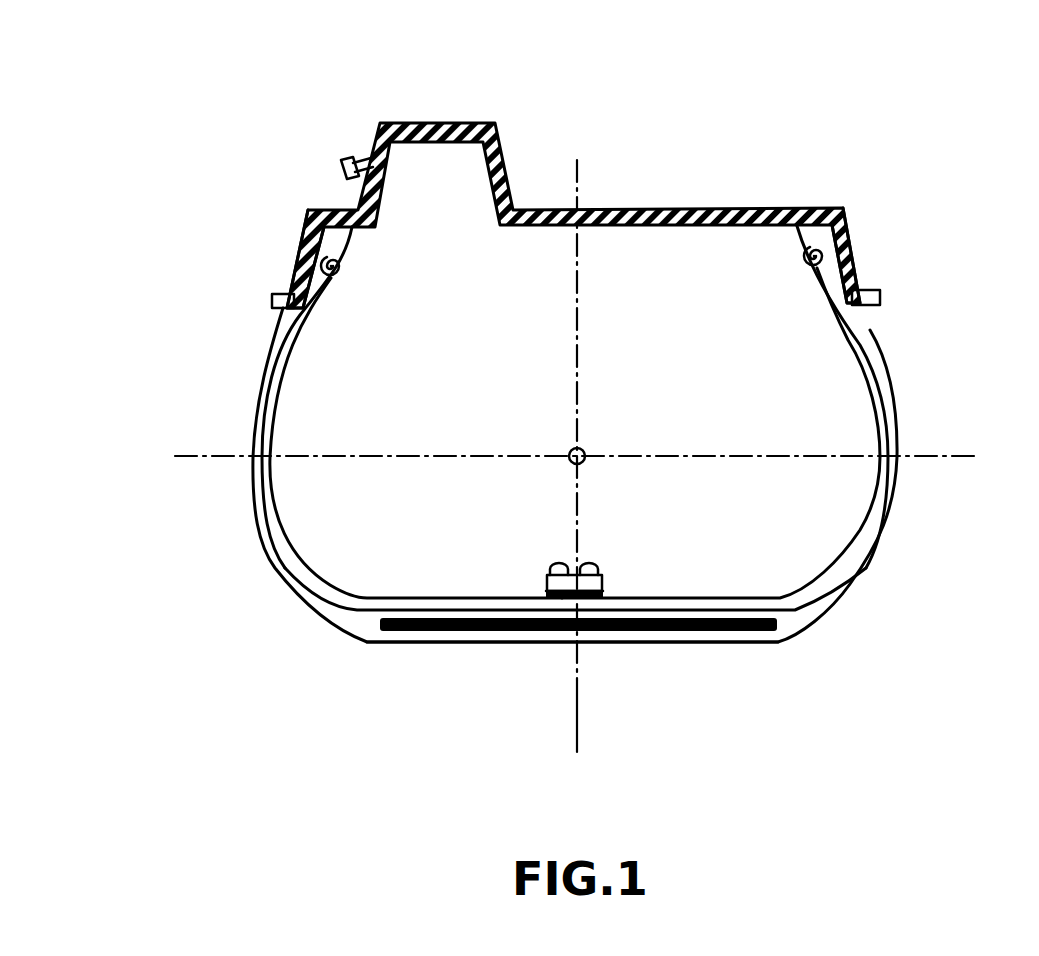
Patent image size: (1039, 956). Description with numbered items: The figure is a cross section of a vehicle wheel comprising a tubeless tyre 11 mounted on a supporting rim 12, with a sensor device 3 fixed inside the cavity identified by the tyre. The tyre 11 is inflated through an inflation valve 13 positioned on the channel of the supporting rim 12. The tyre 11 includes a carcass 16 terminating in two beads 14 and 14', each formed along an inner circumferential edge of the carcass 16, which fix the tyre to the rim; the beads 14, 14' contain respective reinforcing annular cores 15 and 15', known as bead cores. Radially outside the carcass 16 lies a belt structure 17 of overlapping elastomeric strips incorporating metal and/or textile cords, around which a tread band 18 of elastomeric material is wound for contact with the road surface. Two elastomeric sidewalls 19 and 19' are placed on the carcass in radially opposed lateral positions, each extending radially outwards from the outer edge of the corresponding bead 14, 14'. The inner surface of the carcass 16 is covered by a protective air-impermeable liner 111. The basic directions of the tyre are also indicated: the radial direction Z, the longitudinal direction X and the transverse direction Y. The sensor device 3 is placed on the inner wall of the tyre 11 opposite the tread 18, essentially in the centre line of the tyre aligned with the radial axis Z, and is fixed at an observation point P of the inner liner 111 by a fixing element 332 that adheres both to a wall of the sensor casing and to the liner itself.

The tyre 11 is at (863, 576).
The supporting rim 12 is at (534, 206).
The inflation valve 13 is at (358, 156).
The bead 14 is at (258, 259).
The bead 14' is at (900, 256).
The reinforcing annular core 15 is at (388, 297).
The reinforcing annular core 15' is at (747, 291).
The carcass 16 is at (288, 562).
The belt structure 17 is at (378, 630).
The tread band 18 is at (690, 642).
The sidewall 19 is at (237, 397).
The sidewall 19' is at (900, 397).
The liner 111 is at (487, 597).
The sensor device 3 is at (586, 566).
The fixing element 332 is at (545, 632).
The observation point P is at (562, 630).
The longitudinal direction X is at (583, 449).
The transverse direction Y is at (593, 457).
The radial direction Z is at (582, 262).